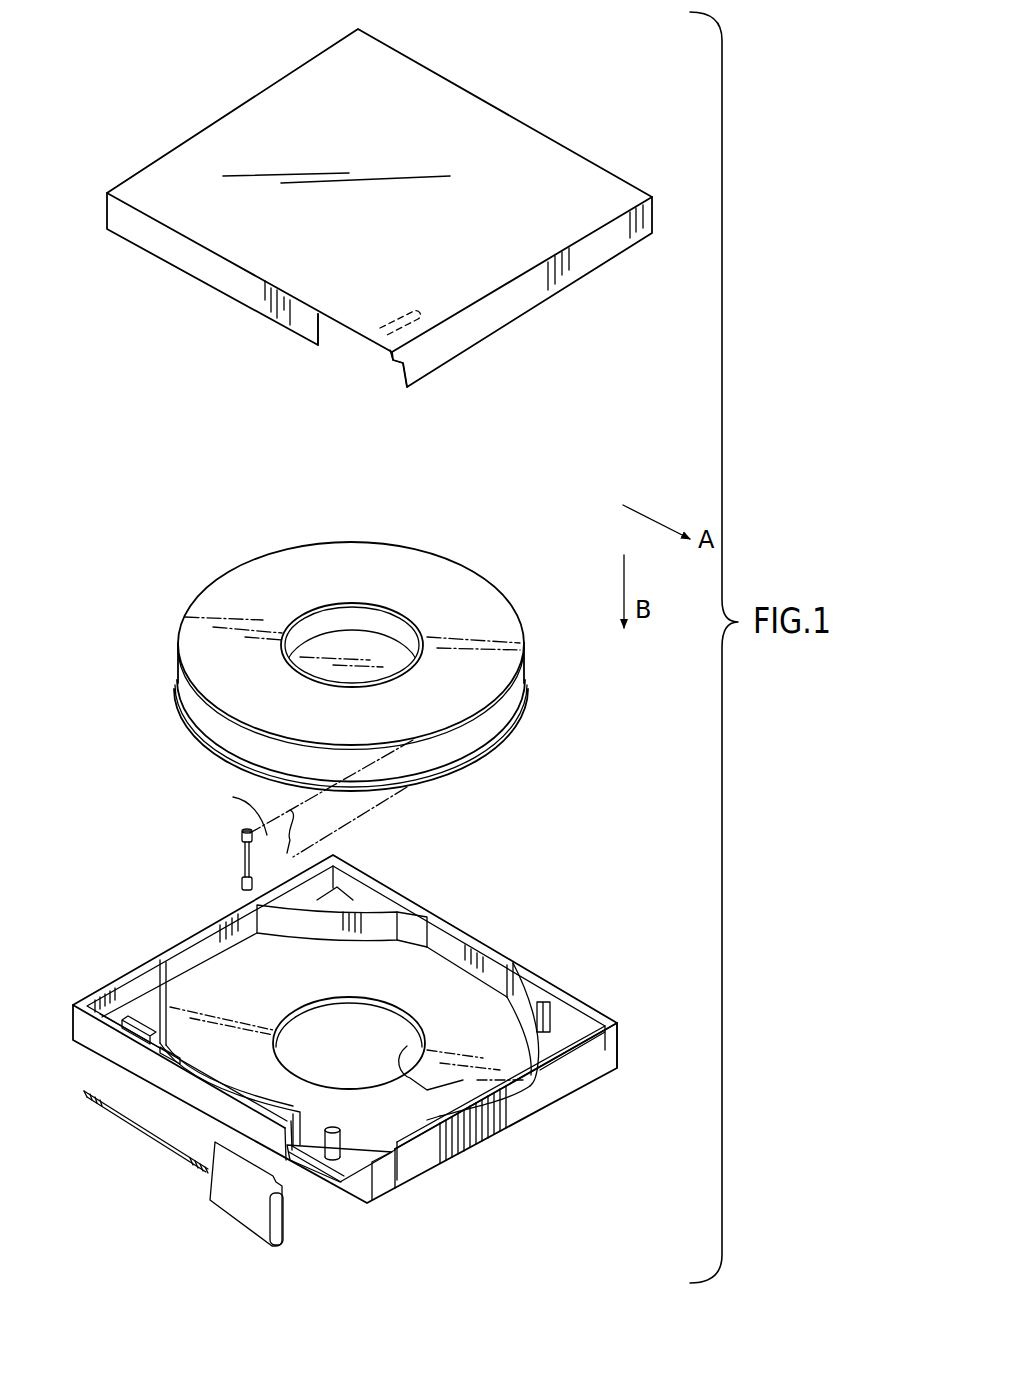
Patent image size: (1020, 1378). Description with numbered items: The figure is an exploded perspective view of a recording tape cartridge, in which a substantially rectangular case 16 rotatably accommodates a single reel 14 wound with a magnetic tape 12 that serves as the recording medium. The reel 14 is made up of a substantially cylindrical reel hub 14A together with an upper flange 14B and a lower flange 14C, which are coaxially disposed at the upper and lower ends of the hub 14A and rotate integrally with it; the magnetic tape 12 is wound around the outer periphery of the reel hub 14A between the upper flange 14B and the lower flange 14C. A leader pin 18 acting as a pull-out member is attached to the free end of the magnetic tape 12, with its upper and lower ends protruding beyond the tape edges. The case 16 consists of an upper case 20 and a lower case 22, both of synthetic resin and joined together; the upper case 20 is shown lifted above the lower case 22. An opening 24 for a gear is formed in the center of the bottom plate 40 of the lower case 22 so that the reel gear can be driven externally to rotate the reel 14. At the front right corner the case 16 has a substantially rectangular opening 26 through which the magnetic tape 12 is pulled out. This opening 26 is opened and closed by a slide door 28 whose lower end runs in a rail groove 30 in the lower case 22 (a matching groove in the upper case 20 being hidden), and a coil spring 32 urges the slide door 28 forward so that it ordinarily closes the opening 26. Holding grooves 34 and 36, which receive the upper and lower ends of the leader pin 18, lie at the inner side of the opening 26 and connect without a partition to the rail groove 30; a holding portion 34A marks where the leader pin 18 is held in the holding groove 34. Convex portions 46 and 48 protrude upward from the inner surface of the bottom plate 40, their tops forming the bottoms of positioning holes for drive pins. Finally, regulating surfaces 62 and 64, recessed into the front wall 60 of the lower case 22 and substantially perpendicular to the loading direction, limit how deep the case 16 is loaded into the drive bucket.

The magnetic tape 12 is at (247, 740).
The reel 14 is at (494, 578).
The reel hub 14A is at (380, 624).
The upper flange 14B is at (515, 628).
The lower flange 14C is at (510, 737).
The case 16 is at (375, 662).
The leader pin 18 is at (242, 835).
The upper case 20 is at (553, 136).
The lower case 22 is at (511, 946).
The opening 24 is at (366, 1050).
The opening 26 is at (341, 342).
The slide door 28 is at (247, 1210).
The rail groove 30 is at (313, 1150).
The coil spring 32 is at (99, 1108).
The holding groove 34 is at (393, 364).
The holding portion 34A is at (419, 320).
The holding groove 36 is at (344, 1192).
The bottom plate 40 is at (420, 1110).
The convex portion 46 is at (336, 1127).
The convex portion 48 is at (548, 1003).
The front wall 60 is at (533, 1090).
The regulating surface 62 is at (384, 1184).
The regulating surface 64 is at (584, 1066).